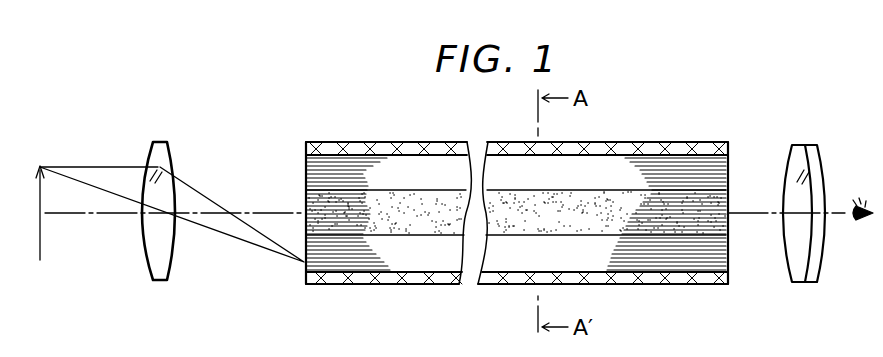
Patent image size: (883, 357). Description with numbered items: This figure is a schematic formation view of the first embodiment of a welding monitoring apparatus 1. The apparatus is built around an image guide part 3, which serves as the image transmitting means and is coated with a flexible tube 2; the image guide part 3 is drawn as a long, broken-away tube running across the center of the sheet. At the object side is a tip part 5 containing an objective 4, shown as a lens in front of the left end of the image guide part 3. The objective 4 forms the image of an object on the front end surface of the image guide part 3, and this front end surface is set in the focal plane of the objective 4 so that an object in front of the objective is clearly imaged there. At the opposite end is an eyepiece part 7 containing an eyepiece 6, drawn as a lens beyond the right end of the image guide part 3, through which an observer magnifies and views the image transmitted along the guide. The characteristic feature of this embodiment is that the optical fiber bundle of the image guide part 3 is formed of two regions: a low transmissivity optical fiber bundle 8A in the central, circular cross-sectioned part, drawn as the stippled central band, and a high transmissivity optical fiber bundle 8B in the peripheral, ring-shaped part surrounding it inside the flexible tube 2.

The welding monitoring apparatus 1 is at (642, 130).
The flexible tube 2 is at (680, 280).
The image guide part 3 is at (378, 132).
The objective 4 is at (166, 152).
The tip part 5 is at (175, 115).
The eyepiece 6 is at (797, 258).
The eyepiece part 7 is at (789, 133).
The low transmissivity optical fiber bundle 8A is at (348, 222).
The high transmissivity optical fiber bundle 8B is at (418, 257).